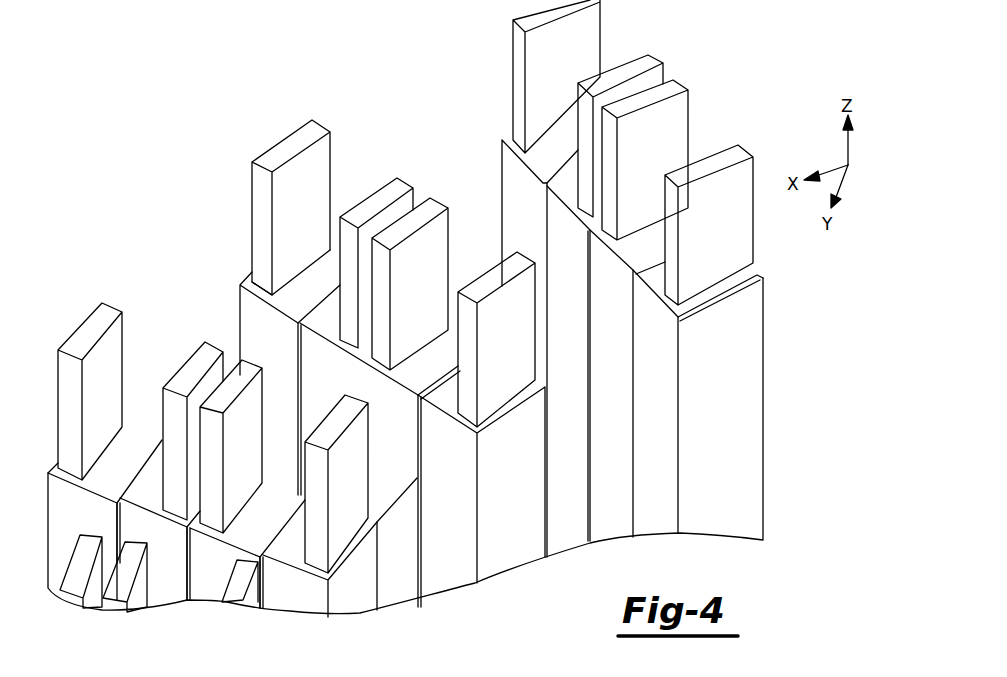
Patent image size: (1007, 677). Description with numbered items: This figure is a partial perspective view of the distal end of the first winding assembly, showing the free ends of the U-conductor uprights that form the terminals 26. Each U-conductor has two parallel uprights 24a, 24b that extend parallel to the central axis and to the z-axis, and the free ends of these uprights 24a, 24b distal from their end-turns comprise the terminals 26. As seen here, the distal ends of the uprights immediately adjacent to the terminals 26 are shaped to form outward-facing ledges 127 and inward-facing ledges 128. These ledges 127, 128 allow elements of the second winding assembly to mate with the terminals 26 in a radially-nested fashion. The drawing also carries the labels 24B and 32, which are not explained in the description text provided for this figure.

The terminals 26 is at (252, 182).
The inward-facing ledges 128 is at (307, 285).
The outward-facing ledges 127 is at (327, 322).
The upright 24a is at (257, 302).
The upright 24b is at (310, 348).
The pedestal column 24B is at (447, 557).
The base 32 is at (405, 407).